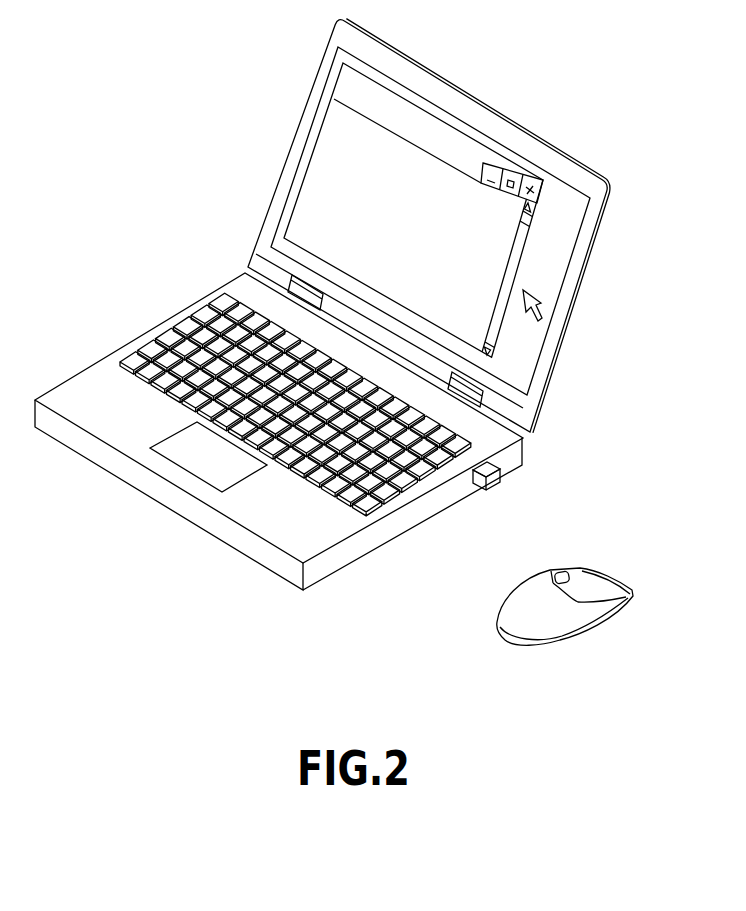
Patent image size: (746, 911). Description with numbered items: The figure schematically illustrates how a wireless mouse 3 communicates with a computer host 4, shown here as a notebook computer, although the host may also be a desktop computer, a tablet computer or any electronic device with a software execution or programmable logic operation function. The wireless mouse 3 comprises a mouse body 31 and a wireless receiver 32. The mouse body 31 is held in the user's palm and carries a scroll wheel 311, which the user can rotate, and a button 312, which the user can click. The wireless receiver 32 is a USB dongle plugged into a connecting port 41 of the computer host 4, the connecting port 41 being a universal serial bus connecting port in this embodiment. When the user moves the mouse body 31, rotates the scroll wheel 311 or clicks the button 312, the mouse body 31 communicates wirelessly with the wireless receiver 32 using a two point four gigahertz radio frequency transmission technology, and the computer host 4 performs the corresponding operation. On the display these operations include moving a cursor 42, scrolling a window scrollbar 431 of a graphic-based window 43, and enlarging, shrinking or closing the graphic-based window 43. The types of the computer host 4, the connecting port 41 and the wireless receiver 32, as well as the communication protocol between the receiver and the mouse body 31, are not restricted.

The computer host 4 is at (345, 304).
The connecting port 41 is at (468, 478).
The cursor 42 is at (524, 290).
The graphic-based window 43 is at (413, 210).
The window scrollbar 431 is at (518, 255).
The wireless mouse 3 is at (584, 601).
The mouse body 31 is at (541, 617).
The scroll wheel 311 is at (585, 567).
The button 312 is at (629, 598).
The wireless receiver 32 is at (498, 478).